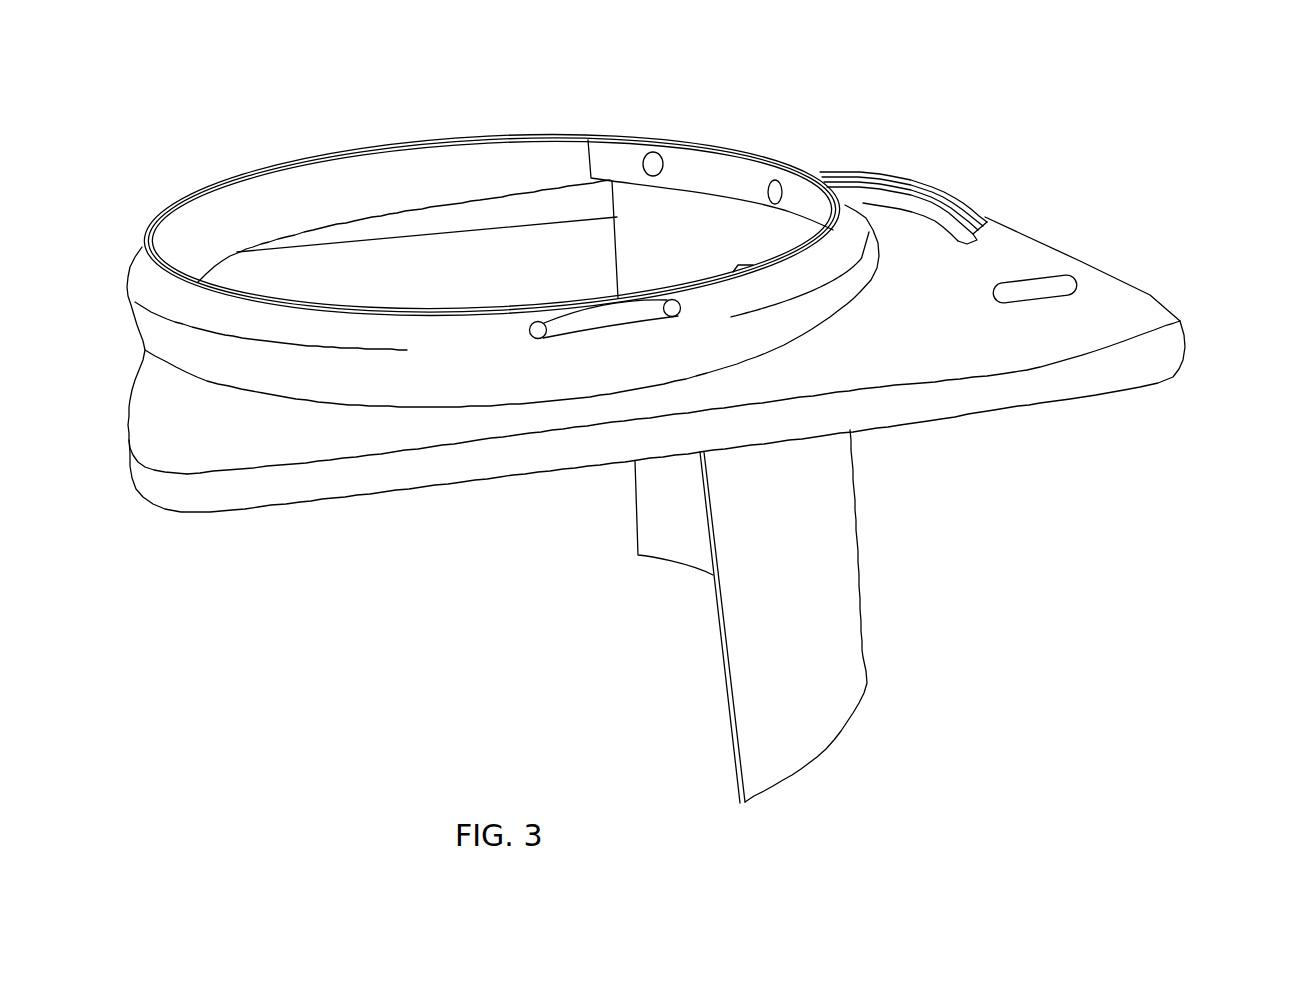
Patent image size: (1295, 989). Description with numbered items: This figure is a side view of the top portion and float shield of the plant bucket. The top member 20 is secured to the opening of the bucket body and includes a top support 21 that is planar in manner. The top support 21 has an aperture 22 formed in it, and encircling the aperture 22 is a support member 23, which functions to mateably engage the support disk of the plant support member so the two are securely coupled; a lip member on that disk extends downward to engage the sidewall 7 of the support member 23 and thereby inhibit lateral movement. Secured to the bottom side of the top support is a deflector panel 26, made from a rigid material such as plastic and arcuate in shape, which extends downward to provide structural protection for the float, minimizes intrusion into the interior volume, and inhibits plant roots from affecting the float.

The sidewall 7 is at (127, 286).
The top member 20 is at (993, 227).
The top support 21 is at (1013, 353).
The aperture 22 is at (462, 257).
The support member 23 is at (352, 182).
The deflector panel 26 is at (832, 655).